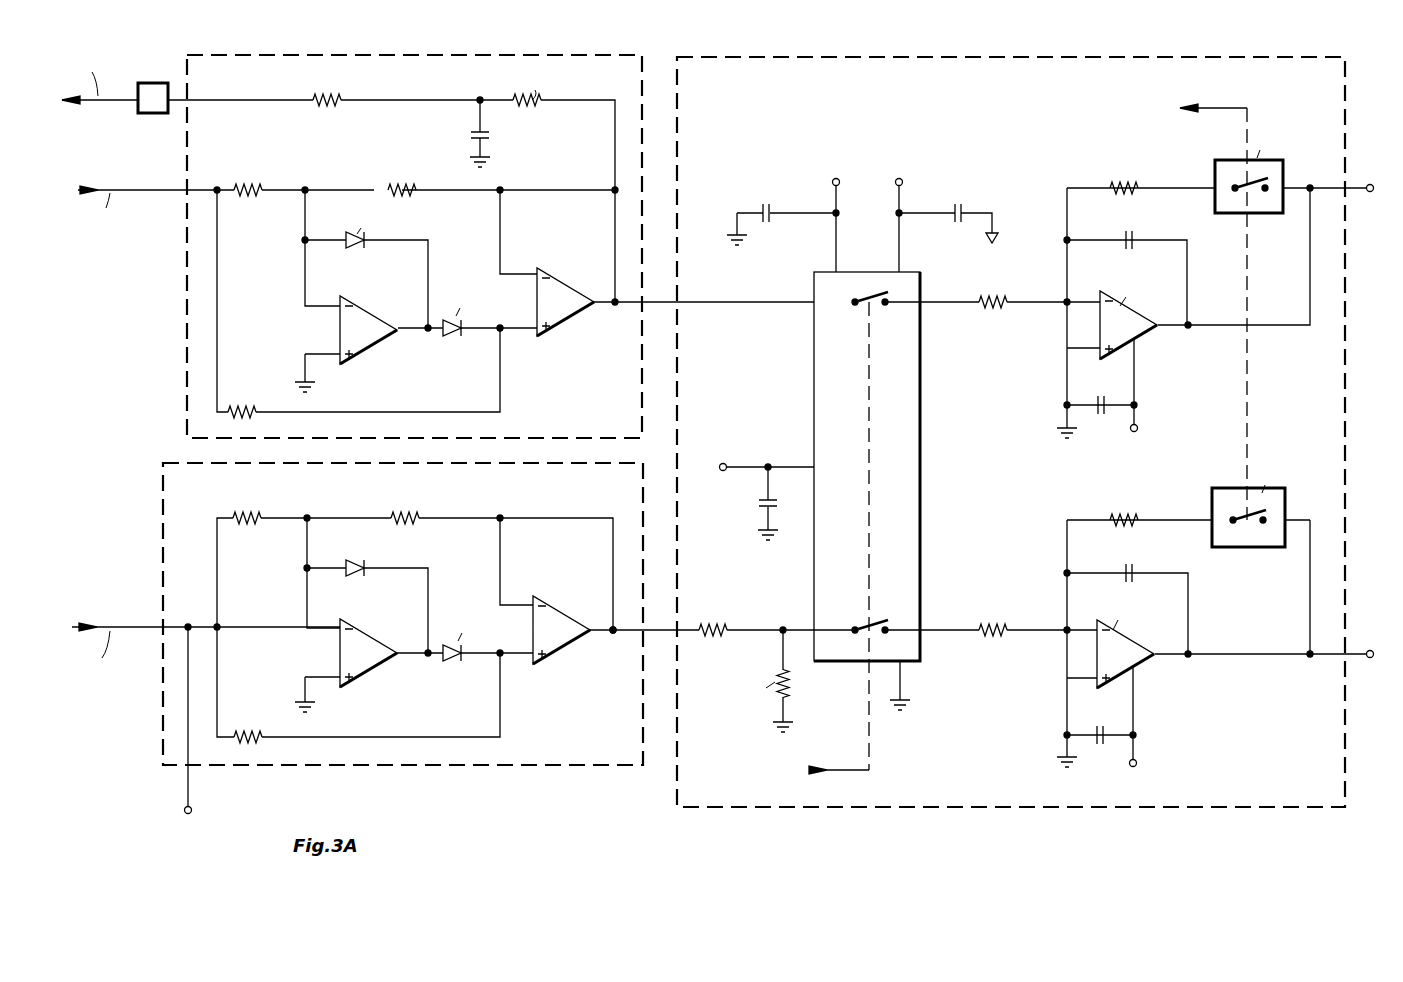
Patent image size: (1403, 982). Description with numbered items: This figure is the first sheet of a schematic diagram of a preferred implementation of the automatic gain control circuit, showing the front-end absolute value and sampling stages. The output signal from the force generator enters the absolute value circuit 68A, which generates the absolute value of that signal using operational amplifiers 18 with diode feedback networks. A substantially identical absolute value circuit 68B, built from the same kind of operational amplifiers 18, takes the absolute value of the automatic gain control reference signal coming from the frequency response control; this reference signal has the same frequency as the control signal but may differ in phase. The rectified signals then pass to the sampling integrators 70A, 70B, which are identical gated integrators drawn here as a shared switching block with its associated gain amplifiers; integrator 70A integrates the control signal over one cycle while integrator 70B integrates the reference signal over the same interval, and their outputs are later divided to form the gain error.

The operational amplifier 18 is at (376, 340).
The absolute value circuit 68A is at (187, 290).
The absolute value circuit 68B is at (517, 768).
The sampling integrator 70A is at (1040, 418).
The sampling integrator 70B is at (950, 57).